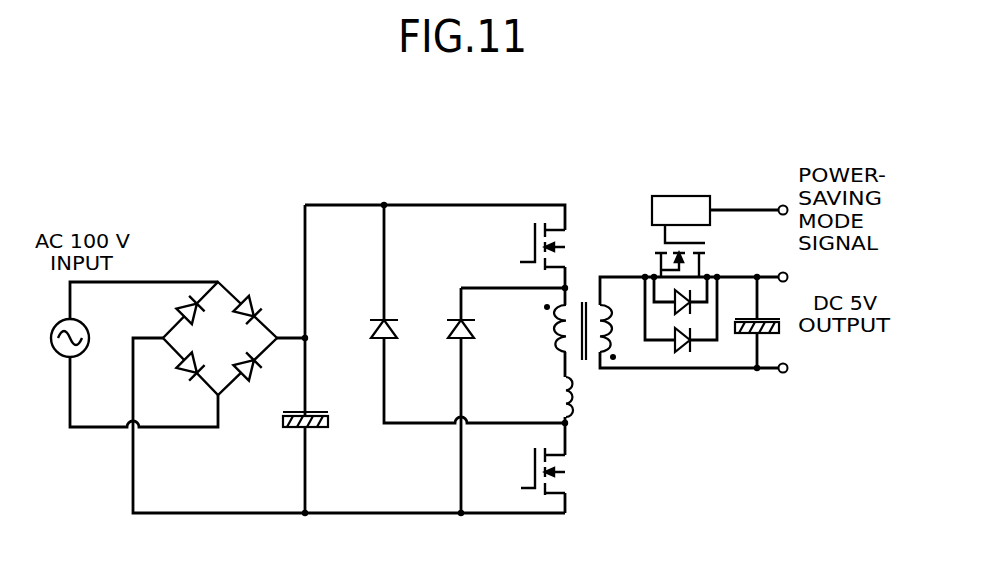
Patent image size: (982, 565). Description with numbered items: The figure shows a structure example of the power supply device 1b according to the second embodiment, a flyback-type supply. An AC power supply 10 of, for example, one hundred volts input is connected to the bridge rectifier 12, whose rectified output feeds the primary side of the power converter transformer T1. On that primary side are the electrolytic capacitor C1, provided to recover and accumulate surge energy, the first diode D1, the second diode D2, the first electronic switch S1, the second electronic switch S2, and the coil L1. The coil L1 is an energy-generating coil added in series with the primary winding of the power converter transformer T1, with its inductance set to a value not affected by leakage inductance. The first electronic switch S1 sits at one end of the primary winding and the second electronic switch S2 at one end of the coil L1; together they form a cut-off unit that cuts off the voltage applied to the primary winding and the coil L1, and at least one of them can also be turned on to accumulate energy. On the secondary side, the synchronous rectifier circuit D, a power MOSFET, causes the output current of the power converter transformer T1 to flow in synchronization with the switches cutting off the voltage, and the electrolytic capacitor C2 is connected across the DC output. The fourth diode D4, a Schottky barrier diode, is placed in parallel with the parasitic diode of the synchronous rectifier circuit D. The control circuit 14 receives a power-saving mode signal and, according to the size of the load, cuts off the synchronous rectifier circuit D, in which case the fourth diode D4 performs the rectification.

The power supply device 1b is at (545, 176).
The AC power supply 10 is at (56, 356).
The bridge rectifier 12 is at (233, 269).
The control circuit 14 is at (683, 196).
The electrolytic capacitor C1 is at (295, 426).
The electrolytic capacitor C2 is at (765, 340).
The first diode D1 is at (375, 319).
The second diode D2 is at (473, 343).
The fourth diode D4 is at (702, 328).
The synchronous rectifier circuit D is at (696, 251).
The first electronic switch S1 is at (561, 471).
The second electronic switch S2 is at (562, 246).
The power converter transformer T1 is at (585, 306).
The coil L1 is at (586, 397).